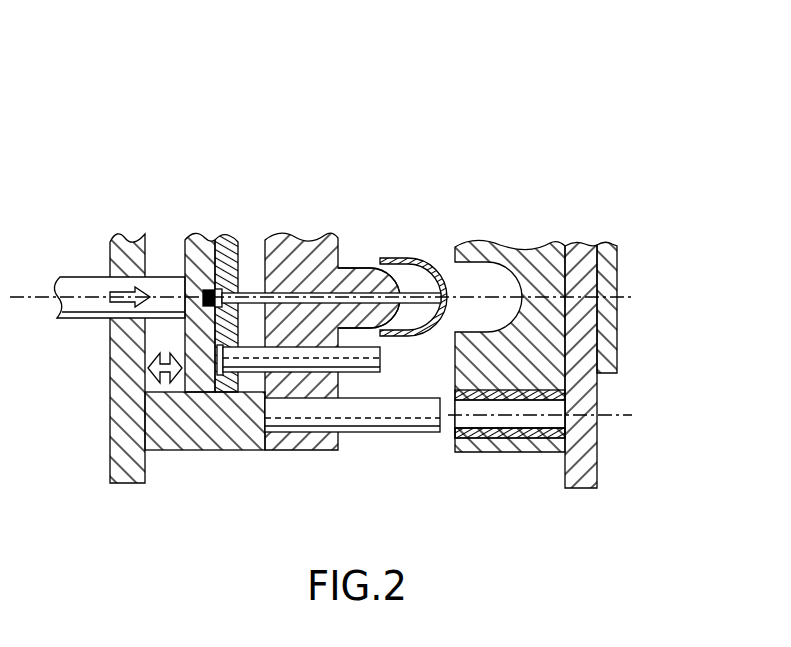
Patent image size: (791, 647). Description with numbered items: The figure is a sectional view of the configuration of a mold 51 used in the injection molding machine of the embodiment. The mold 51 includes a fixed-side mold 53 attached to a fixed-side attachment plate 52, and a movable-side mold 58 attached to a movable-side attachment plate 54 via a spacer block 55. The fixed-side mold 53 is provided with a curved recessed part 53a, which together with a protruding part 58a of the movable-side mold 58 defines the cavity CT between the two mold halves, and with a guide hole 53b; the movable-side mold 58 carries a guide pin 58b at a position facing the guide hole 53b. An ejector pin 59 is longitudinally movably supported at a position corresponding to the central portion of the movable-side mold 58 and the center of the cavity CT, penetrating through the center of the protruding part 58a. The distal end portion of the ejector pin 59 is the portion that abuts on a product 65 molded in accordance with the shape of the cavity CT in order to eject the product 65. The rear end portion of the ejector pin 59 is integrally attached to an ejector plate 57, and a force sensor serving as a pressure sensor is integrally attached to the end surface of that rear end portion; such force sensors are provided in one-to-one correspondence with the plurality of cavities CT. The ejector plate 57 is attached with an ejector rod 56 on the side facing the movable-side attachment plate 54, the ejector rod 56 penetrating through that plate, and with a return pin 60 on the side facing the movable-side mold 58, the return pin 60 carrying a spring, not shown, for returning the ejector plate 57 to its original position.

The mold 51 is at (60, 78).
The fixed-side attachment plate 52 is at (597, 469).
The fixed-side mold 53 is at (537, 367).
The curved recessed part 53a is at (513, 337).
The guide hole 53b is at (510, 428).
The movable-side attachment plate 54 is at (120, 455).
The spacer block 55 is at (206, 425).
The ejector rod 56 is at (80, 285).
The ejector plate 57 is at (197, 340).
The movable-side mold 58 is at (295, 250).
The protruding part 58a is at (362, 268).
The guide pin 58b is at (392, 432).
The ejector pin 59 is at (251, 288).
The return pin 60 is at (300, 375).
The product 65 is at (418, 262).
The cavity CT is at (500, 287).